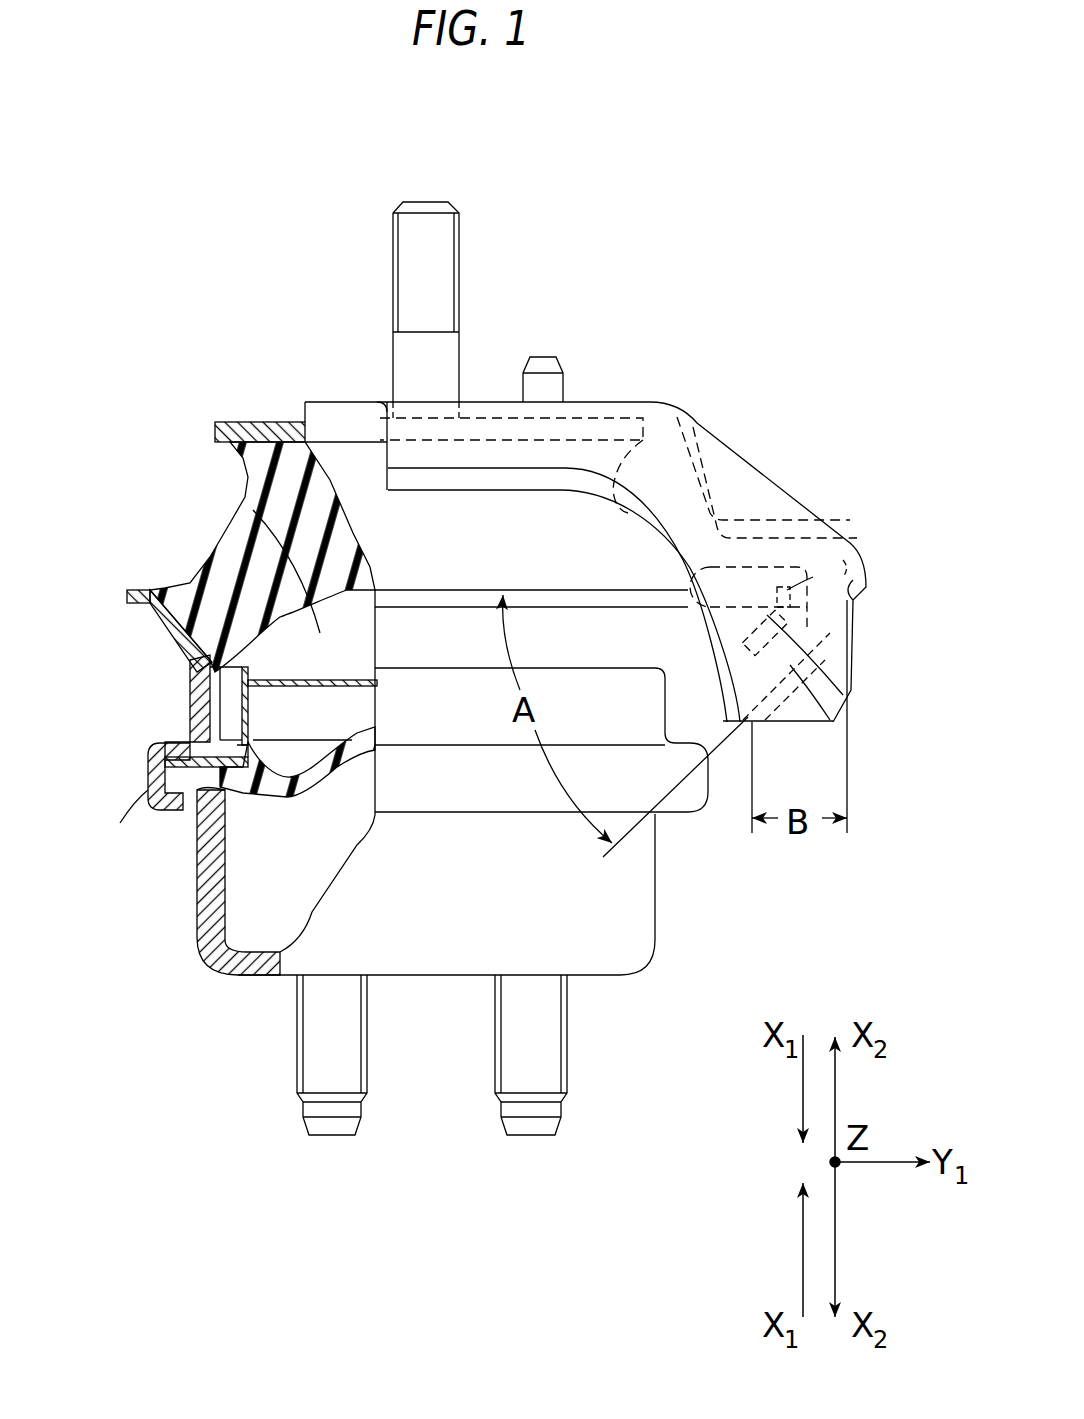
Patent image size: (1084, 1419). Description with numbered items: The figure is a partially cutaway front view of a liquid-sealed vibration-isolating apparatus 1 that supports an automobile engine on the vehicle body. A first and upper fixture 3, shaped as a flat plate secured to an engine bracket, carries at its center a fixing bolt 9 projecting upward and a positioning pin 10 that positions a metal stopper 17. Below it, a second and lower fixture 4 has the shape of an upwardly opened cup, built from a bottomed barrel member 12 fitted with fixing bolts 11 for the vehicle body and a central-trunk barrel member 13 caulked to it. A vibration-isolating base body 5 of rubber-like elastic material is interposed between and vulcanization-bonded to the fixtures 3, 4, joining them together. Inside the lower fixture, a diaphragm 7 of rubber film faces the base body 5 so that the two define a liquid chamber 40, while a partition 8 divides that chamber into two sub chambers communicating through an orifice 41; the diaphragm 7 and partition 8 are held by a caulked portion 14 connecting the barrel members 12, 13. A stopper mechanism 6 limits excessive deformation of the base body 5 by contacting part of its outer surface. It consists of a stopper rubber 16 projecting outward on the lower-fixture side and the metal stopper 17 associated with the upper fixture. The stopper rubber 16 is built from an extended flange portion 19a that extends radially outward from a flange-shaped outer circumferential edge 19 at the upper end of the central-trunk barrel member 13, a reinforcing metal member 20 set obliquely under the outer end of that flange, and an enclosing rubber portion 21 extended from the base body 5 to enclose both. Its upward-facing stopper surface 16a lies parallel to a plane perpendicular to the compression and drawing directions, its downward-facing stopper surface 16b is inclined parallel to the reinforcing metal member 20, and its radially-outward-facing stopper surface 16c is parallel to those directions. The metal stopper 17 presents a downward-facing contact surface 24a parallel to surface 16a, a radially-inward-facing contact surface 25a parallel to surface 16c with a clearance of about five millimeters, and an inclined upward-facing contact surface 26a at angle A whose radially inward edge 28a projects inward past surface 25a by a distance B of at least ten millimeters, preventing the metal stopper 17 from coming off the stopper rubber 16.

The vibration-isolating apparatus 1 is at (668, 378).
The first and upper fixture 3 is at (253, 435).
The second and lower fixture 4 is at (190, 940).
The vibration-isolating base body 5 is at (253, 510).
The stopper mechanism 6 is at (712, 437).
The diaphragm 7 is at (320, 770).
The partition 8 is at (280, 670).
The fixing bolt 9 is at (445, 283).
The positioning pin 10 is at (550, 358).
The fixing bolts 11 is at (545, 1068).
The bottomed barrel member 12 is at (213, 903).
The central-trunk barrel member 13 is at (200, 688).
The caulked portion 14 is at (150, 790).
The stopper rubber 16 is at (780, 587).
The upward-facing stopper surface 16a is at (818, 500).
The downward-facing stopper surface 16b is at (782, 718).
The radially-outward-facing stopper surface 16c is at (833, 567).
The metal stopper 17 is at (735, 470).
The flange-shaped outer circumferential edge 19 is at (567, 597).
The extended flange portion 19a is at (830, 540).
The reinforcing metal member 20 is at (852, 693).
The enclosing rubber portion 21 is at (812, 595).
The downward-facing contact surface 24a is at (767, 572).
The radially-inward-facing contact surface 25a is at (848, 588).
The upward-facing contact surface 26a is at (830, 710).
The radially inward edge 28a is at (748, 720).
The liquid chamber 40 is at (318, 633).
The orifice 41 is at (233, 710).